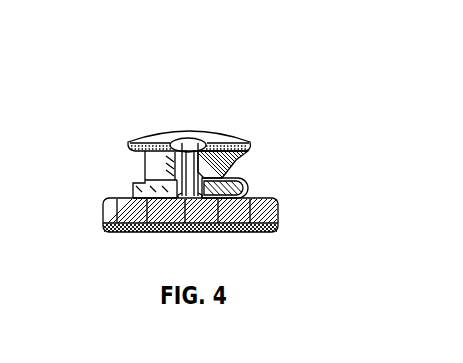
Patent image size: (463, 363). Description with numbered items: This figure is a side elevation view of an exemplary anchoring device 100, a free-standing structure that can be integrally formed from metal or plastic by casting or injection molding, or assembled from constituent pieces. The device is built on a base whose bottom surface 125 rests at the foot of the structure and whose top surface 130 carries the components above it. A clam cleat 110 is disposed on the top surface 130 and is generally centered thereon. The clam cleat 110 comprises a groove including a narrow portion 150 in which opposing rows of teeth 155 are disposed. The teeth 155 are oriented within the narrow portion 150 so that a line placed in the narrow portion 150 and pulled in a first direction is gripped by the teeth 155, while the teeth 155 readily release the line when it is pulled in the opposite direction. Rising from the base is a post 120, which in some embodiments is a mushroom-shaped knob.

The anchoring device 100 is at (155, 80).
The clam cleat 110 is at (197, 130).
The post 120 is at (101, 153).
The bottom surface 125 is at (133, 226).
The top surface 130 is at (133, 197).
The narrow portion 150 is at (253, 167).
The teeth 155 is at (203, 181).